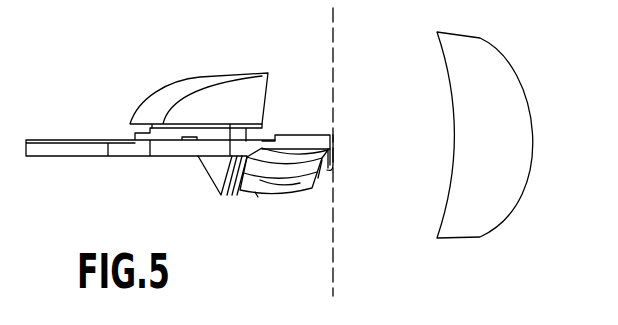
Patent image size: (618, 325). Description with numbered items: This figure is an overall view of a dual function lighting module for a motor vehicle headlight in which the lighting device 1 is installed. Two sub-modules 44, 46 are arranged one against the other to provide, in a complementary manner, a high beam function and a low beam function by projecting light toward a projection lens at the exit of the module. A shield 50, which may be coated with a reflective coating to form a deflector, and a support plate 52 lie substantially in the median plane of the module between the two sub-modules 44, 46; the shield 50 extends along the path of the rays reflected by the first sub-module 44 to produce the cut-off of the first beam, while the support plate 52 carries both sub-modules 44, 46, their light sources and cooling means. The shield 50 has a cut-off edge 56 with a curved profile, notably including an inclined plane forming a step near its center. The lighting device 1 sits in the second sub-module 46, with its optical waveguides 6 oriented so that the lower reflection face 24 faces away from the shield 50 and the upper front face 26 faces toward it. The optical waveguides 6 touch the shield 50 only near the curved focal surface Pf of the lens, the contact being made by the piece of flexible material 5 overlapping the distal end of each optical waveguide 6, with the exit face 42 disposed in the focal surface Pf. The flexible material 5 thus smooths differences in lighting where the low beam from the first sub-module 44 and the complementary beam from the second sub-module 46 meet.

The lighting device 1 is at (258, 198).
The piece of flexible material 5 is at (325, 162).
The optical waveguide 6 is at (248, 186).
The lower face 24 is at (285, 181).
The upper face 26 is at (290, 158).
The exit face 42 is at (336, 160).
The first sub-module 44 is at (153, 87).
The second sub-module 46 is at (204, 187).
The shield 50 is at (312, 140).
The support plate 52 is at (63, 147).
The cut-off edge 56 is at (332, 139).
The focal surface Pf is at (333, 275).